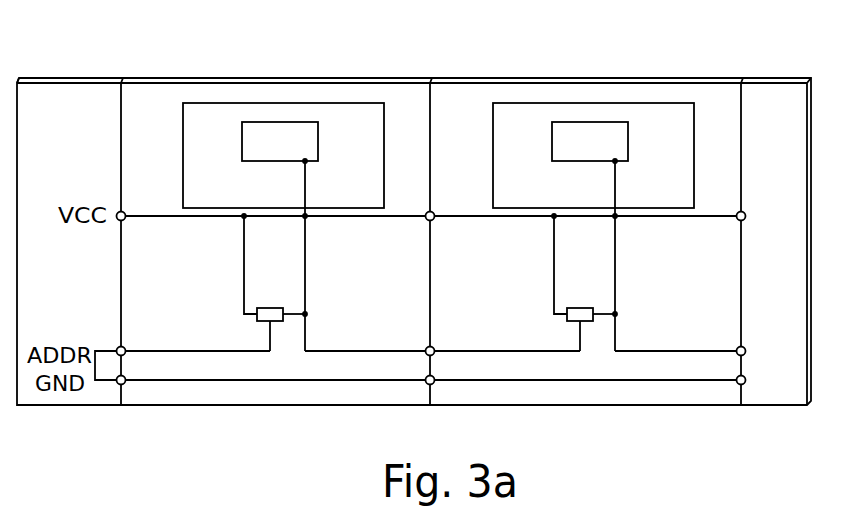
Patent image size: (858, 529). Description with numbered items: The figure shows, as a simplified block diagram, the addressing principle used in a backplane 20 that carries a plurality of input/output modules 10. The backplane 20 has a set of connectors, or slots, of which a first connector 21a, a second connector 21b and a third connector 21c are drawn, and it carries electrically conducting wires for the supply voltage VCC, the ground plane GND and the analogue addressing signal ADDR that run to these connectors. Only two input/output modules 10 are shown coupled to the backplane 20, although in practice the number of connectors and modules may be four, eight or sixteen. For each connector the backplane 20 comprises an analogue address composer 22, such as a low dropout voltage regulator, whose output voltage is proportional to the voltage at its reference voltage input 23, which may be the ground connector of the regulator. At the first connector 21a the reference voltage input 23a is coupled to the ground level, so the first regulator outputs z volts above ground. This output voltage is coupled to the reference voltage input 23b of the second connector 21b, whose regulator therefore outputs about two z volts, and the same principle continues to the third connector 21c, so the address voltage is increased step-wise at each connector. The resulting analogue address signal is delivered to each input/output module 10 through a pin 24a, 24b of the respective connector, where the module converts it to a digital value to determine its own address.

The input/output module 10 is at (362, 58).
The backplane 20 is at (85, 78).
The first connector 21a is at (120, 418).
The second connector 21b is at (429, 418).
The third connector 21c is at (740, 418).
The analogue address composer 22 is at (271, 308).
The reference voltage input 23 is at (268, 330).
The reference voltage input of the first connector 23a is at (126, 350).
The reference voltage input of the second connector 23b is at (436, 350).
The pin 24a is at (306, 217).
The pin 24b is at (616, 217).